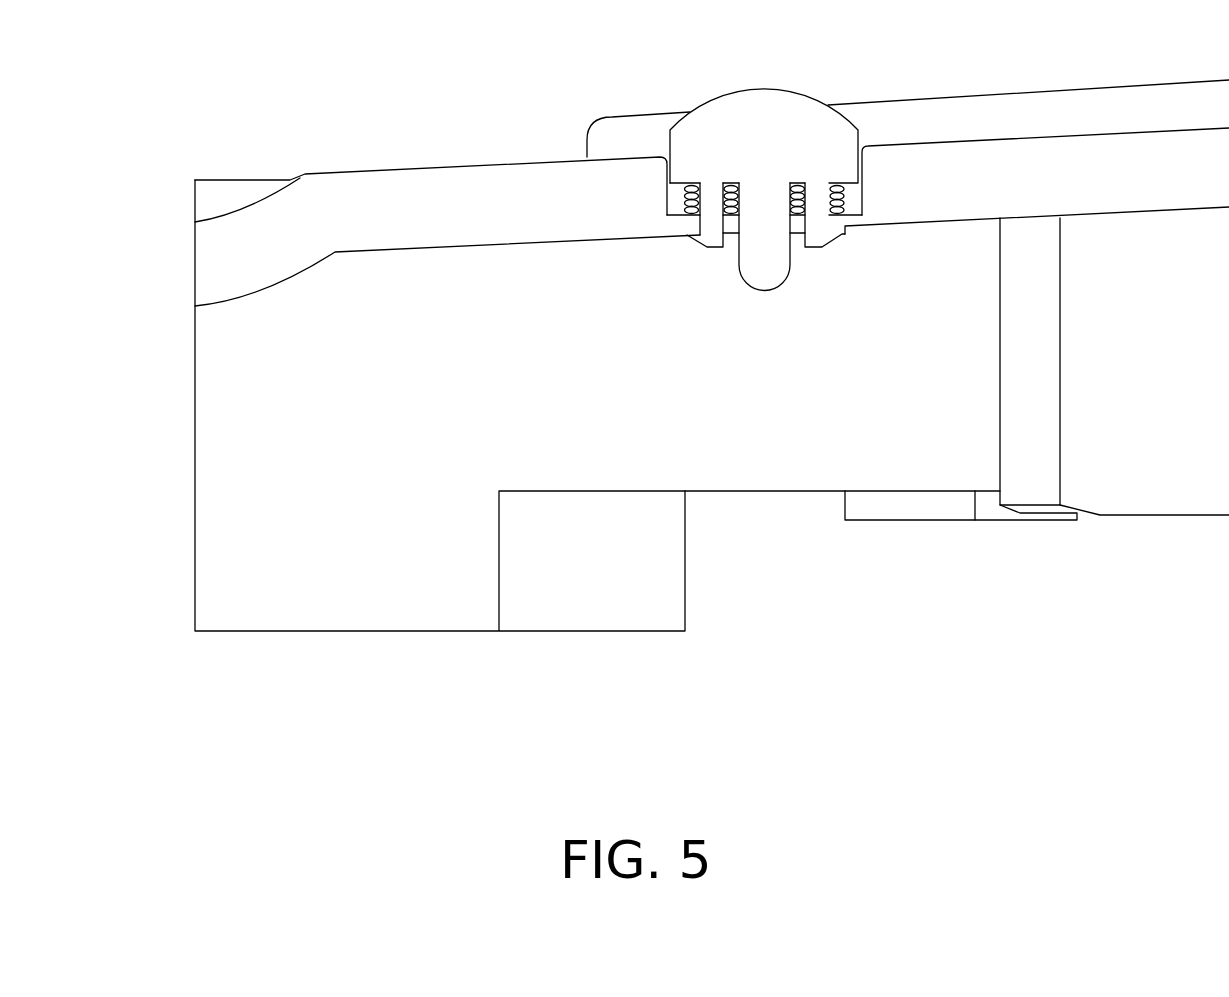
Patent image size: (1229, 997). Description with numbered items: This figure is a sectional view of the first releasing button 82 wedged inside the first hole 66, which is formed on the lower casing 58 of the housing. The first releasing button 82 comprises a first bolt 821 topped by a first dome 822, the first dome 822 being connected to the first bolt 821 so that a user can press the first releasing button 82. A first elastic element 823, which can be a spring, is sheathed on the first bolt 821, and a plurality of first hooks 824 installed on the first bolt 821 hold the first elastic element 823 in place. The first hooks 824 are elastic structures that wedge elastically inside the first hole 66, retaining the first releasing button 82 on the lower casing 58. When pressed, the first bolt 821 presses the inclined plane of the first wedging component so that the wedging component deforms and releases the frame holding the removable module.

The lower casing 58 is at (218, 264).
The first hole 66 is at (853, 203).
The first releasing button 82 is at (848, 388).
The first bolt 821 is at (757, 267).
The first dome 822 is at (743, 107).
The first elastic element 823 is at (849, 207).
The first hooks 824 is at (712, 232).